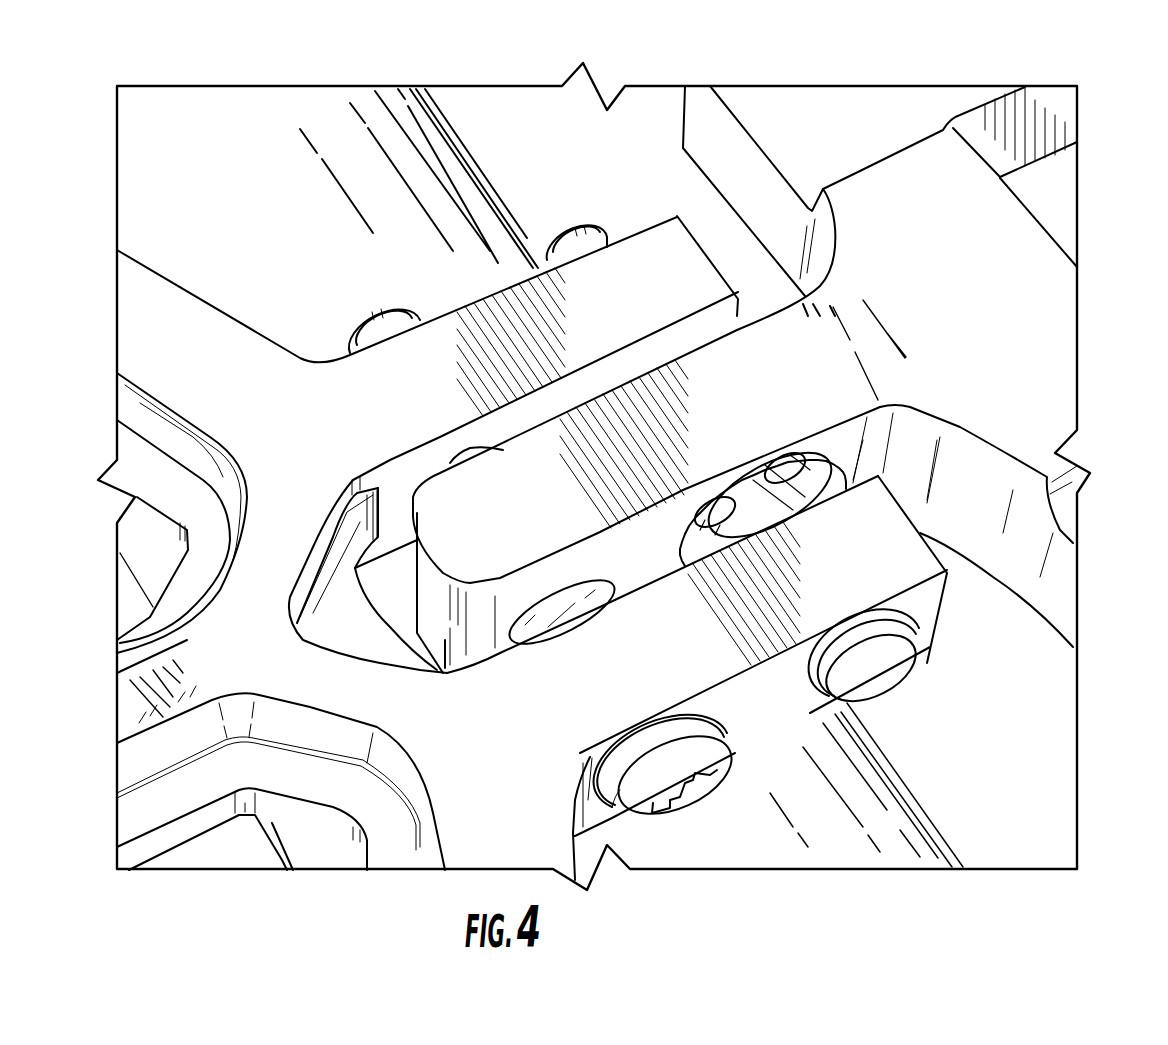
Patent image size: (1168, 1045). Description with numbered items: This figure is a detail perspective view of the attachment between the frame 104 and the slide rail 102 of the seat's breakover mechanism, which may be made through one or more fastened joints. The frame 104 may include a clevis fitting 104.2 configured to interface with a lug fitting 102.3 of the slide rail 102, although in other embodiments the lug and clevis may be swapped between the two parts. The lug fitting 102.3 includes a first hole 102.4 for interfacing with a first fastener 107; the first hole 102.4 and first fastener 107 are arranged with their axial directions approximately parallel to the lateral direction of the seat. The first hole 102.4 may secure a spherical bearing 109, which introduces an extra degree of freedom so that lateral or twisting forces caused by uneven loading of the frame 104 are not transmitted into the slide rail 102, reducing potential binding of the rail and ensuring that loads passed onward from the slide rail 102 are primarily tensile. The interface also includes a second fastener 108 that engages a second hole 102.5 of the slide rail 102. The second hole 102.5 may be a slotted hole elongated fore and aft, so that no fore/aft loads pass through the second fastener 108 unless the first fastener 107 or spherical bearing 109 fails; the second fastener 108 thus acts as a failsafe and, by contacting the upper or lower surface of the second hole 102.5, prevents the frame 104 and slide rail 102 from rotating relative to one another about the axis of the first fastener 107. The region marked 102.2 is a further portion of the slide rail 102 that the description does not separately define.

The slide rail 102 is at (812, 154).
The cross member flange 102.2 is at (977, 273).
The lug fitting 102.3 is at (547, 463).
The first hole 102.4 is at (713, 542).
The second hole 102.5 is at (530, 633).
The frame 104 is at (178, 352).
The clevis fitting 104.2 is at (446, 353).
The first fastener 107 is at (880, 667).
The second fastener 108 is at (677, 790).
The spherical bearing 109 is at (908, 545).